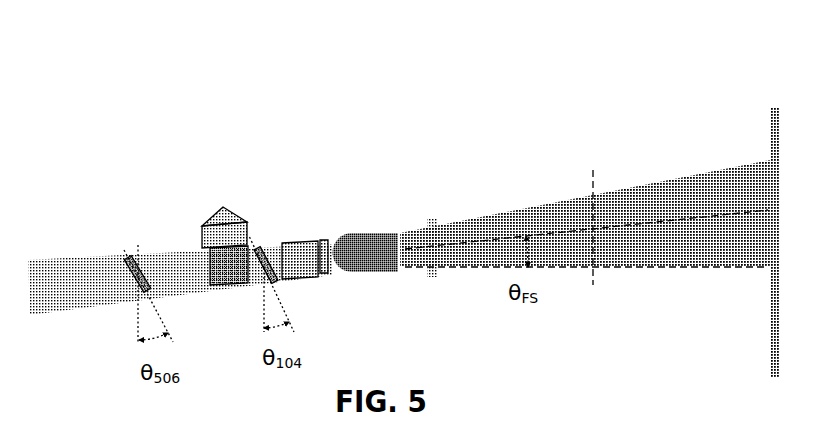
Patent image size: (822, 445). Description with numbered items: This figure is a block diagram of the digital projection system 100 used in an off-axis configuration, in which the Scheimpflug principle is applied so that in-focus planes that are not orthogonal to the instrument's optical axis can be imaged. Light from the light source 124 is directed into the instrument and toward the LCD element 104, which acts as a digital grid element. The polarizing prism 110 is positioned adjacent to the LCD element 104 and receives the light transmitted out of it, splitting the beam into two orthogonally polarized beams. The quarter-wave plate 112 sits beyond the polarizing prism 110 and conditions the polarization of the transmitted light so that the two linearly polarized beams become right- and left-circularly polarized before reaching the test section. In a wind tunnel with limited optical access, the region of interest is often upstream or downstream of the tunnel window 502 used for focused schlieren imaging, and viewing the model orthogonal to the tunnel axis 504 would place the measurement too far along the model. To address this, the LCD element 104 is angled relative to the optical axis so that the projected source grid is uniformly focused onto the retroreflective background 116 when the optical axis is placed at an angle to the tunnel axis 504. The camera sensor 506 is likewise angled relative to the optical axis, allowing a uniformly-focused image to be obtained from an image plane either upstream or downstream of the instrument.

The digital projection system 100 is at (230, 70).
The LCD element 104 is at (262, 243).
The polarizing prism 110 is at (305, 268).
The quarter-wave plate 112 is at (327, 240).
The retroreflective background 116 is at (772, 108).
The light source 124 is at (223, 203).
The tunnel window 502 is at (432, 218).
The tunnel axis 504 is at (593, 170).
The camera sensor 506 is at (133, 260).